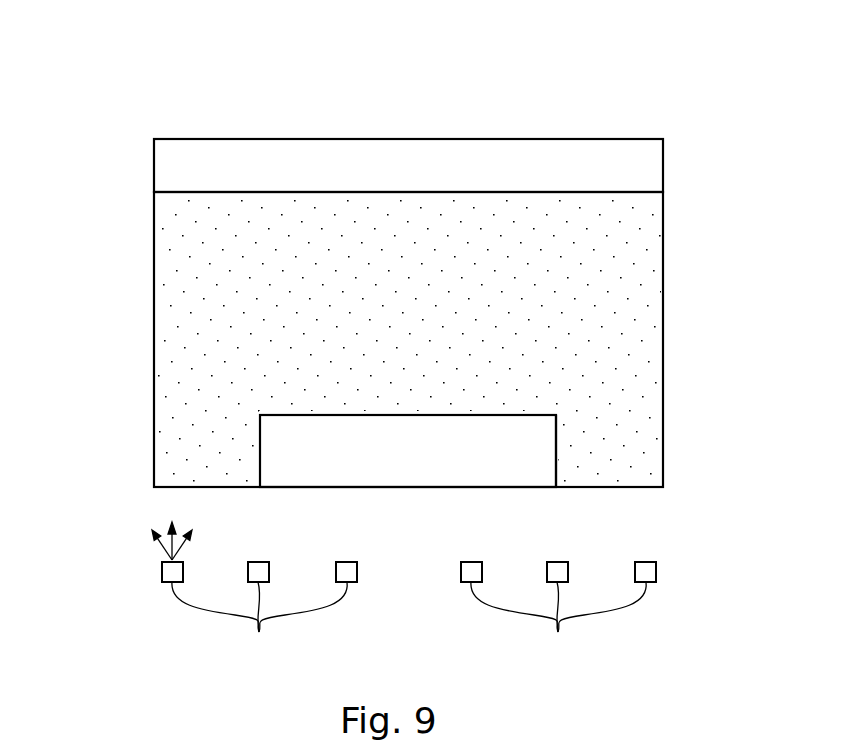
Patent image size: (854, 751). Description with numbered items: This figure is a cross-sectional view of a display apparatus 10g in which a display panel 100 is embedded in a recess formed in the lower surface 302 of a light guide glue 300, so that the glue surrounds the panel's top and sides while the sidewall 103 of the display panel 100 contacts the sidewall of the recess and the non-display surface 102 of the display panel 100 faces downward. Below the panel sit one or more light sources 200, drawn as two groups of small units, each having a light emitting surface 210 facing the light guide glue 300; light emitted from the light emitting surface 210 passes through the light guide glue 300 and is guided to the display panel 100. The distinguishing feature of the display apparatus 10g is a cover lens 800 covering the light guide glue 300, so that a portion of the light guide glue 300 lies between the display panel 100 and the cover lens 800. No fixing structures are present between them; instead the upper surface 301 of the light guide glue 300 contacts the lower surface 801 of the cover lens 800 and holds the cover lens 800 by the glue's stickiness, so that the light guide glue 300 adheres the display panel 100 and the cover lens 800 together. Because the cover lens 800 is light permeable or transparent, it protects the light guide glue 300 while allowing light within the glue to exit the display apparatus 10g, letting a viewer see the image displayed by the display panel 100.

The display apparatus 10g is at (78, 65).
The display panel 100 is at (431, 467).
The non-display surface 102 is at (523, 487).
The sidewall 103 is at (557, 452).
The light sources 200 is at (363, 594).
The light emitting surface 210 is at (163, 565).
The light guide glue 300 is at (168, 235).
The upper surface 301 is at (583, 192).
The lower surface 302 is at (652, 487).
The cover lens 800 is at (640, 168).
The lower surface 801 is at (364, 192).